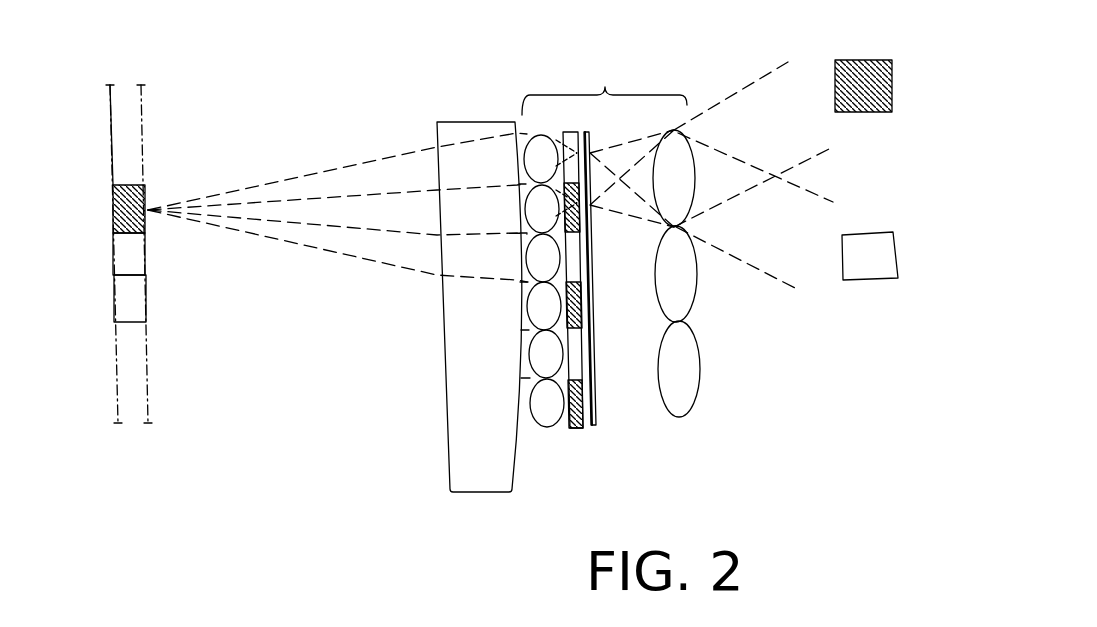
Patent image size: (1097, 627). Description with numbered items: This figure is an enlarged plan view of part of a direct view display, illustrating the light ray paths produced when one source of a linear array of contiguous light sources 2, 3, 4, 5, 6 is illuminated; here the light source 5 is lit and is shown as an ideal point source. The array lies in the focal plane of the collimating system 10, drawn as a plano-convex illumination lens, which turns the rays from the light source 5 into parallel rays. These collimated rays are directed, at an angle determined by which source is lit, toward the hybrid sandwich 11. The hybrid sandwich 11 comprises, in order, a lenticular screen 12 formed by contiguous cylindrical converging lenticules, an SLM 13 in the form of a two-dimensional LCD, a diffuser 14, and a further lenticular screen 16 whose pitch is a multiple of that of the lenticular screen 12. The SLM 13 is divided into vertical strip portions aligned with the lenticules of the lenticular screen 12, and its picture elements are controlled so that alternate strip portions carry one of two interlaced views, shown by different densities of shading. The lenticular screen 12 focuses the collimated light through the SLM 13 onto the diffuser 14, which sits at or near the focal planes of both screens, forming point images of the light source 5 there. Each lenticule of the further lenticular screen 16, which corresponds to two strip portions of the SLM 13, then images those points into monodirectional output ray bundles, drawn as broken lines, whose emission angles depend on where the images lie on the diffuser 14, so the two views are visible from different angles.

The light source 2 is at (118, 355).
The light source 3 is at (114, 300).
The light source 4 is at (113, 258).
The light source 5 is at (113, 214).
The light source 6 is at (110, 148).
The collimating system 10 is at (447, 444).
The hybrid sandwich 11 is at (605, 87).
The lenticular screen 12 is at (548, 427).
The spatial light modulator 13 is at (577, 428).
The diffuser 14 is at (593, 427).
The further lenticular screen 16 is at (679, 417).